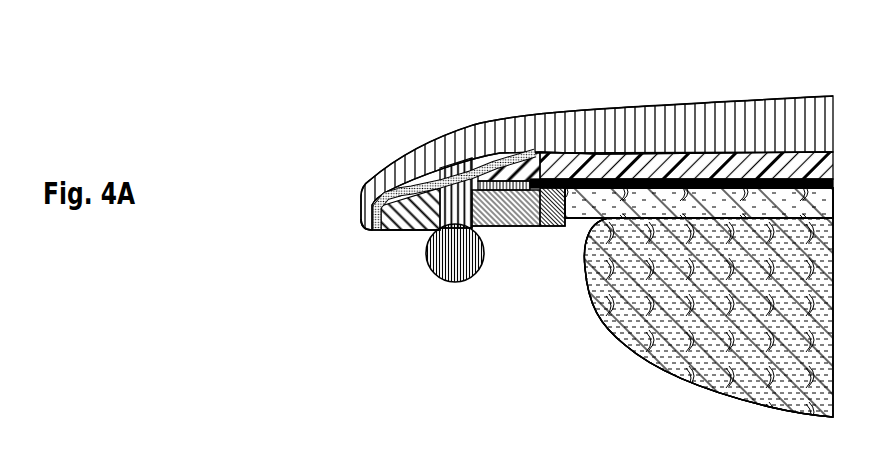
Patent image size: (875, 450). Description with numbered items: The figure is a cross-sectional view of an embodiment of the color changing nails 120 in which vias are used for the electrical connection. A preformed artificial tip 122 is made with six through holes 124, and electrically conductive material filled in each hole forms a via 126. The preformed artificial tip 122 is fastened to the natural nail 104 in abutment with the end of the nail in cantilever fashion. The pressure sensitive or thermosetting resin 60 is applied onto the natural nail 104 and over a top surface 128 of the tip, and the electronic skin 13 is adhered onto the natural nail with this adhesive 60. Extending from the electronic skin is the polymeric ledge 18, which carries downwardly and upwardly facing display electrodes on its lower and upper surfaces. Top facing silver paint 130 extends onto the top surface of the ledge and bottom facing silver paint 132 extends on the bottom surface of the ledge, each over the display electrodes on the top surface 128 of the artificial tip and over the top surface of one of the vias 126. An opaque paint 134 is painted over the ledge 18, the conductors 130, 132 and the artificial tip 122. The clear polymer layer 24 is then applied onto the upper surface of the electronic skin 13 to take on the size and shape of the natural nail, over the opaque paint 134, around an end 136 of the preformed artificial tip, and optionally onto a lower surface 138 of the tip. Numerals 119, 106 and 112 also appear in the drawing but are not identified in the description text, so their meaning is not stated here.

The color changing nails 120 is at (452, 36).
The through holes 124 is at (382, 213).
The top facing silver paint 130 is at (423, 208).
The via 126 is at (462, 212).
The lower surface of the artificial tip 138 is at (418, 233).
The dense hatched member 119 is at (557, 200).
The preformed artificial tip 122 is at (410, 218).
The polymeric ledge 18 is at (505, 178).
The top surface of the preformed artificial tip 128 is at (520, 183).
The electronic skin 13 is at (604, 176).
The pressure sensitive or thermosetting resin 60 is at (730, 178).
The natural nail 104 is at (656, 193).
The foam / filler body 106 is at (782, 310).
The circular member 112 is at (455, 253).
The end of the preformed artificial tip 136 is at (368, 214).
The opaque paint 134 is at (418, 205).
The bottom facing silver paint 132 is at (462, 190).
The clear polymer layer 24 is at (369, 228).